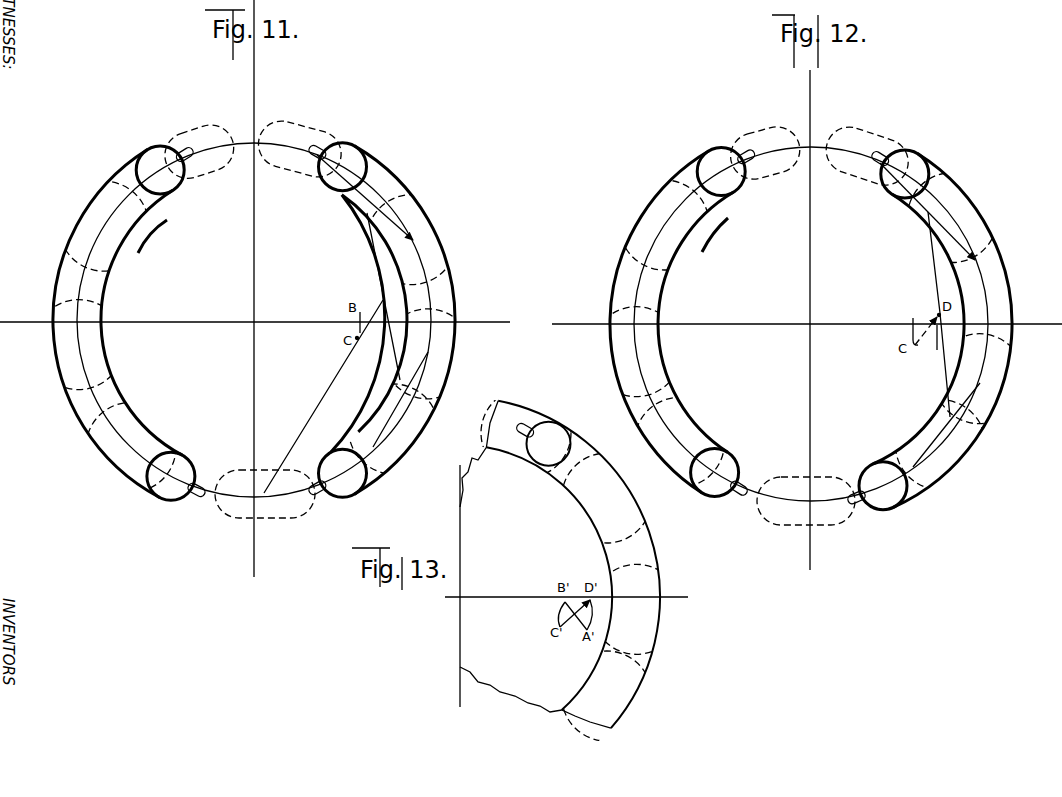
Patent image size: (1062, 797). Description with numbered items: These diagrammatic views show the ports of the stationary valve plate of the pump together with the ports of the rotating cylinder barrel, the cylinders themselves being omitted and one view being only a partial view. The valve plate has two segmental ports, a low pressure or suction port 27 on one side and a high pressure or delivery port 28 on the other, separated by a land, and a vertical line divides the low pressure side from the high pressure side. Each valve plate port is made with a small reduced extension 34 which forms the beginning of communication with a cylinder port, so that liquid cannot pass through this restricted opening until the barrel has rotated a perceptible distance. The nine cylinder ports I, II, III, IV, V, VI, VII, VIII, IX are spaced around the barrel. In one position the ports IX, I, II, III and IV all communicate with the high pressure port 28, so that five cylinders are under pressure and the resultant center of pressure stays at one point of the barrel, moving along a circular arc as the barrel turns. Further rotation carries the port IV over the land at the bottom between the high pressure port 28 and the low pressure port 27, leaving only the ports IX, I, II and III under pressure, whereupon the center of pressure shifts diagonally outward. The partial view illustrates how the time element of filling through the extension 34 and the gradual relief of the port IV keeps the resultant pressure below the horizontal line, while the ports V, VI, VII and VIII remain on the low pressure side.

In FIG. 11, the low pressure port 27 is at (98, 291).
In FIG. 12, the low pressure port 27 is at (663, 288).
In FIG. 11, the high pressure port 28 is at (455, 298).
In FIG. 12, the high pressure port 28 is at (1008, 305).
In FIG. 13, the high pressure port 28 is at (652, 548).
In FIG. 11, the reduced extension 34 is at (320, 490).
In FIG. 12, the reduced extension 34 is at (872, 492).
In FIG. 13, the reduced extension 34 is at (537, 443).
In FIG. 11, the cylinder port I is at (420, 233).
In FIG. 12, the cylinder port I is at (985, 260).
In FIG. 13, the cylinder port I is at (620, 506).
In FIG. 11, the cylinder port II is at (440, 352).
In FIG. 12, the cylinder port II is at (985, 382).
In FIG. 13, the cylinder port II is at (642, 614).
In FIG. 11, the cylinder port III is at (380, 460).
In FIG. 12, the cylinder port III is at (925, 470).
In FIG. 13, the cylinder port III is at (608, 700).
In FIG. 11, the cylinder port IV is at (268, 508).
In FIG. 12, the cylinder port IV is at (815, 515).
In FIG. 11, the cylinder port V is at (115, 452).
In FIG. 12, the cylinder port V is at (668, 440).
In FIG. 11, the cylinder port VI is at (62, 352).
In FIG. 12, the cylinder port VI is at (625, 347).
In FIG. 11, the cylinder port VII is at (78, 227).
In FIG. 12, the cylinder port VII is at (648, 220).
In FIG. 11, the cylinder port VIII is at (175, 138).
In FIG. 12, the cylinder port VIII is at (750, 148).
In FIG. 11, the cylinder port IX is at (313, 145).
In FIG. 12, the cylinder port IX is at (867, 156).
In FIG. 13, the cylinder port IX is at (505, 417).